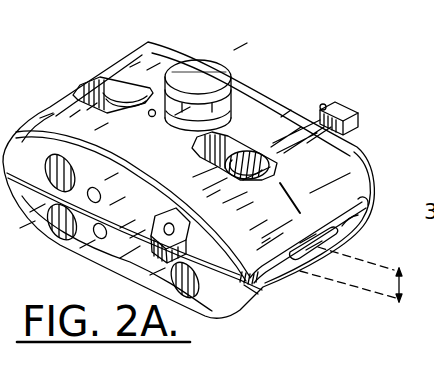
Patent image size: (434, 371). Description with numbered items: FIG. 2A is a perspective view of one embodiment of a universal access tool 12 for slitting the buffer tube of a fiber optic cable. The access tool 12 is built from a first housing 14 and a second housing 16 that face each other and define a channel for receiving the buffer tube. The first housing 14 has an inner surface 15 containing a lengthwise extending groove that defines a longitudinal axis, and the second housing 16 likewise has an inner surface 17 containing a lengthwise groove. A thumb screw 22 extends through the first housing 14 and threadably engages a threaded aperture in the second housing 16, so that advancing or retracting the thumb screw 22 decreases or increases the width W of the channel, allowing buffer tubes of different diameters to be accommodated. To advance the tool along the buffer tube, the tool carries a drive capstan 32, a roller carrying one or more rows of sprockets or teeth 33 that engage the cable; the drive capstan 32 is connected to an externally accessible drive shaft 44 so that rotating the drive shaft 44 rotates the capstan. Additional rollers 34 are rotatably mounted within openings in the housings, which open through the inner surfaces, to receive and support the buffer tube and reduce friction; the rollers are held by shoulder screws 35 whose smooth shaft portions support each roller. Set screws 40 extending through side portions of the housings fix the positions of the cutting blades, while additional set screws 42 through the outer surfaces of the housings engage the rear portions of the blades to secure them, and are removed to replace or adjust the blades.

The universal access tool 12 is at (296, 67).
The first housing 14 is at (153, 45).
The inner surface 15 is at (364, 203).
The second housing 16 is at (259, 290).
The inner surface 17 is at (285, 262).
The thumb screw 22 is at (208, 70).
The drive capstan 32 is at (254, 157).
The sprockets or teeth 33 is at (270, 178).
The additional rollers 34 is at (120, 100).
The shoulder screws 35 is at (62, 172).
The set screws 40 is at (102, 229).
The additional set screws 42 is at (153, 117).
The drive shaft 44 is at (346, 110).
The width of the channel W is at (365, 279).